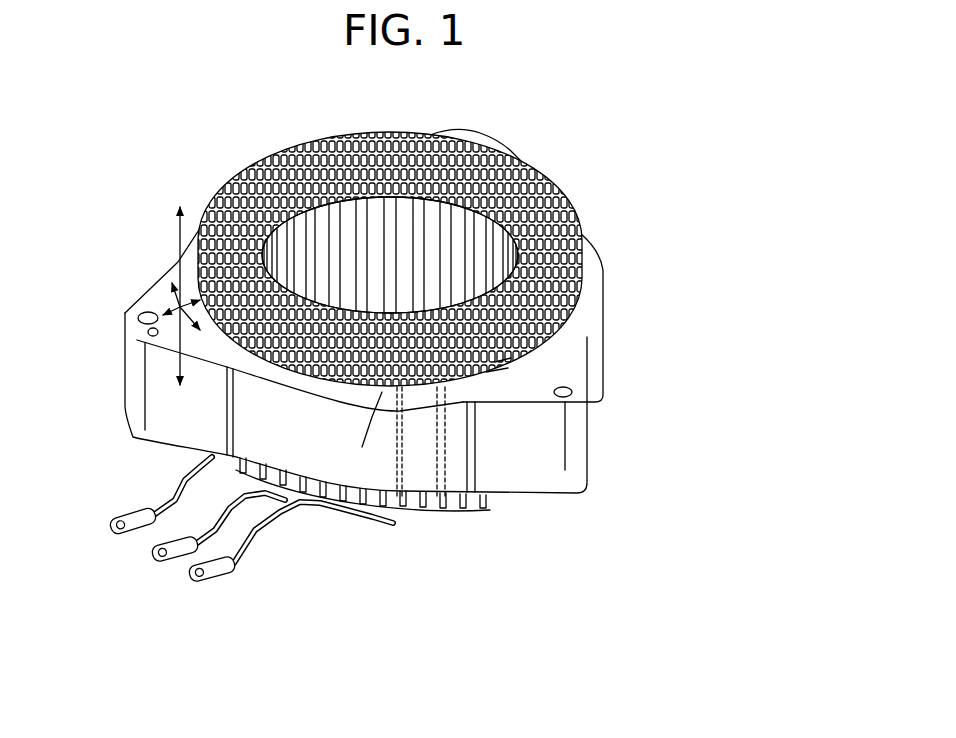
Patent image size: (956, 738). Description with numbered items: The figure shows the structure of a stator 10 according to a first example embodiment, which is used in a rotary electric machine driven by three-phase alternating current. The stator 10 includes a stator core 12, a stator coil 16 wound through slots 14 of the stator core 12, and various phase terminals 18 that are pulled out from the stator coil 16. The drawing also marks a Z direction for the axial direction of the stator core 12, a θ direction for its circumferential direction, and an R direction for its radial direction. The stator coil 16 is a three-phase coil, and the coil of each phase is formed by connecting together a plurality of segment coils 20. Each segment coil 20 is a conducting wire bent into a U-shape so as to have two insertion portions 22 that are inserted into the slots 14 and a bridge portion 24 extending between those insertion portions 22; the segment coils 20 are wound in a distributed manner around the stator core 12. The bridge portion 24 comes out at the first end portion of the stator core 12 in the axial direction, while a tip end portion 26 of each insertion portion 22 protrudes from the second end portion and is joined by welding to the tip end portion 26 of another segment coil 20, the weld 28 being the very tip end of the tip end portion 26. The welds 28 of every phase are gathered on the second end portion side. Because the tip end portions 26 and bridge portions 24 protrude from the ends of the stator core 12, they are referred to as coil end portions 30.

The stator 10 is at (155, 142).
The stator core 12 is at (590, 282).
The slots 14 is at (385, 385).
The stator coil 16 is at (540, 167).
The phase terminals 18 is at (178, 610).
The segment coils 20 is at (580, 522).
The insertion portions 22 is at (435, 440).
The bridge portion 24 is at (423, 513).
The tip end portion 26 is at (497, 363).
The weld 28 is at (503, 360).
The coil end portions 30 is at (408, 553).